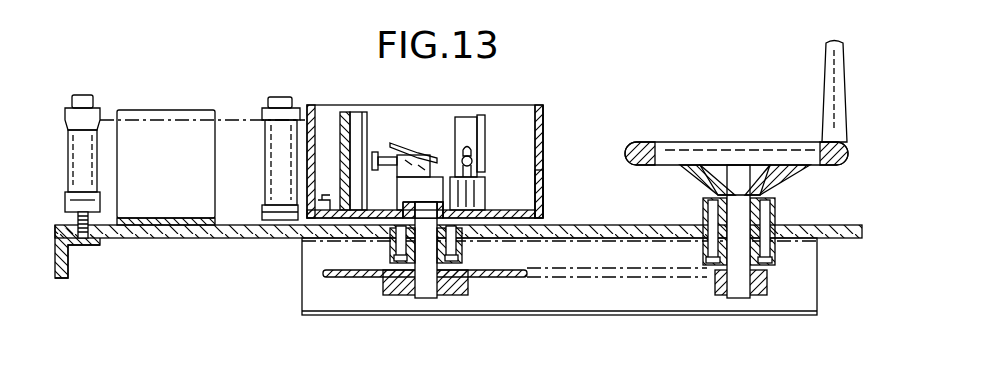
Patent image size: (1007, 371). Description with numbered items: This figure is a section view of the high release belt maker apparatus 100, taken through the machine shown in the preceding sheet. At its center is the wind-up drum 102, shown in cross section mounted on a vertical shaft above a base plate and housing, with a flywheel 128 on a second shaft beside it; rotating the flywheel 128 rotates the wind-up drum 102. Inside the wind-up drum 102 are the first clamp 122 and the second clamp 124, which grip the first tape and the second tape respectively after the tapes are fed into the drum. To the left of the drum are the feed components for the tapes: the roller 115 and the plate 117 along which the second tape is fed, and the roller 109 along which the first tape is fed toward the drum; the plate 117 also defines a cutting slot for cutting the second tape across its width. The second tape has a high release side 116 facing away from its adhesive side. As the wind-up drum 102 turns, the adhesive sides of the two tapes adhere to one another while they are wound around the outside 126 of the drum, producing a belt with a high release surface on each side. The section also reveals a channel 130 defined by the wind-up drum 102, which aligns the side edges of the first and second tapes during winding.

The high release belt maker apparatus 100 is at (568, 60).
The wind-up drum 102 is at (335, 80).
The roller 109 is at (268, 135).
The roller 115 is at (66, 128).
The high release side 116 is at (237, 135).
The plate 117 is at (157, 110).
The first clamp 122 is at (475, 163).
The second clamp 124 is at (378, 152).
The outside of the wind-up drum 126 is at (541, 140).
The flywheel 128 is at (672, 145).
The channel 130 is at (541, 192).